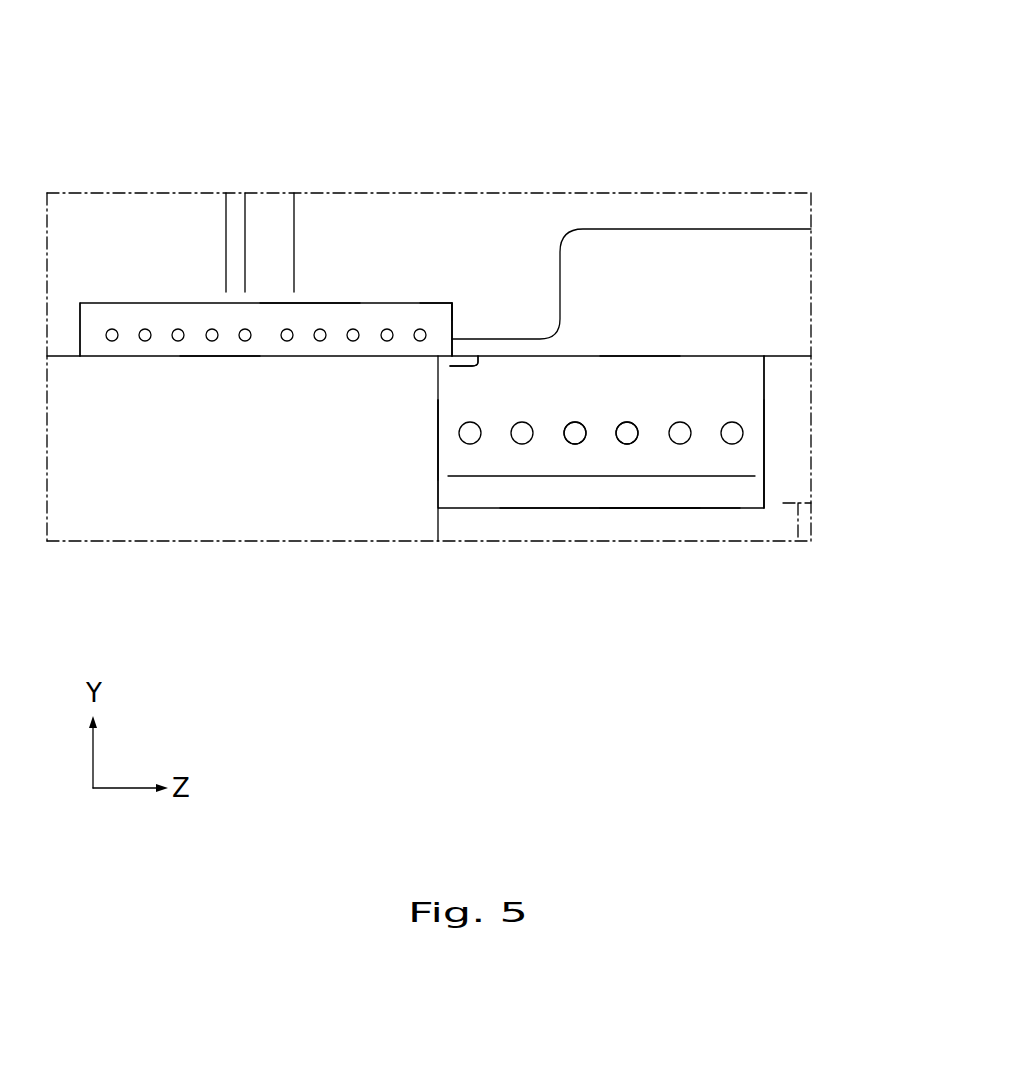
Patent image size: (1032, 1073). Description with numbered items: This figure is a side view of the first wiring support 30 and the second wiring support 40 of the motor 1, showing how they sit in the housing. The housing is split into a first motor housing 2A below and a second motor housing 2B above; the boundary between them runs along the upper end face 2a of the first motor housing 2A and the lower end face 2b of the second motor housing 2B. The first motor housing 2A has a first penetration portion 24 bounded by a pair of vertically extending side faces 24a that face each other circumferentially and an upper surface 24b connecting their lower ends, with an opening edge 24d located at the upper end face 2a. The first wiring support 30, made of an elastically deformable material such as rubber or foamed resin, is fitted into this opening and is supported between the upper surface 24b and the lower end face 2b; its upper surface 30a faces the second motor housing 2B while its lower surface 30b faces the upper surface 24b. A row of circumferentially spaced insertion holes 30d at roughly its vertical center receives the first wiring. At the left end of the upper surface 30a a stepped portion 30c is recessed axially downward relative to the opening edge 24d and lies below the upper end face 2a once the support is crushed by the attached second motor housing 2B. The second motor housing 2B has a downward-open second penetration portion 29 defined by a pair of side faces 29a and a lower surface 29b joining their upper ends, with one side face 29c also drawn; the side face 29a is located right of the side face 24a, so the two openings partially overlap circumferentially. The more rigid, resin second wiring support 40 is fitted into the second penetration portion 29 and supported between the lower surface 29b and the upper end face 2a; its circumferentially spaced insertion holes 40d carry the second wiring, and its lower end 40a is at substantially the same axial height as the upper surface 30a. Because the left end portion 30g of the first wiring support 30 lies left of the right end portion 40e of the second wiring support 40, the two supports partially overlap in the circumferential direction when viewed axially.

The motor 1 is at (800, 136).
The first motor housing 2A is at (305, 480).
The second motor housing 2B is at (503, 230).
The upper end face 2a is at (262, 354).
The lower end face 2b is at (677, 356).
The first penetration portion 24 is at (752, 381).
The side faces 24a is at (440, 457).
The upper surface 24b is at (582, 508).
The opening edge 24d is at (455, 368).
The second penetration portion 29 is at (84, 326).
The side faces 29a is at (450, 323).
The lower surface 29b is at (302, 305).
The connector side wall 29c is at (452, 335).
The first wiring support 30 is at (765, 428).
The upper surface 30a is at (637, 356).
The lower surface 30b is at (665, 508).
The stepped portion 30c is at (439, 365).
The insertion holes 30d is at (567, 425).
The left end portion 30g is at (438, 443).
The second wiring support 40 is at (115, 345).
The lower end 40a is at (217, 356).
The insertion holes 40d is at (145, 333).
The right end portion 40e is at (453, 305).